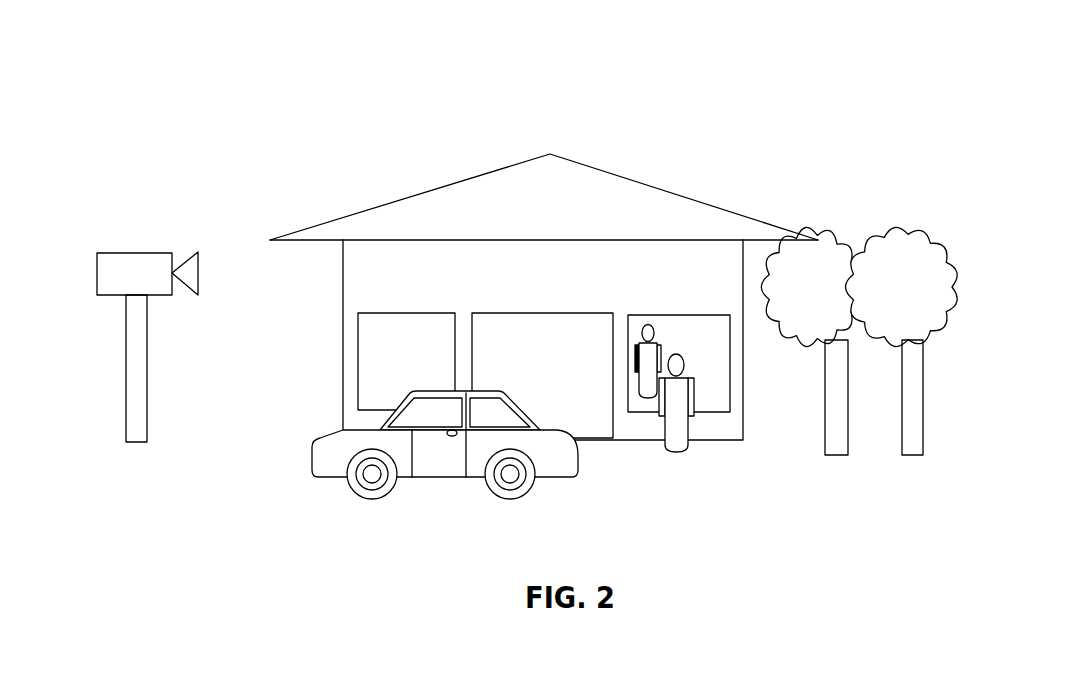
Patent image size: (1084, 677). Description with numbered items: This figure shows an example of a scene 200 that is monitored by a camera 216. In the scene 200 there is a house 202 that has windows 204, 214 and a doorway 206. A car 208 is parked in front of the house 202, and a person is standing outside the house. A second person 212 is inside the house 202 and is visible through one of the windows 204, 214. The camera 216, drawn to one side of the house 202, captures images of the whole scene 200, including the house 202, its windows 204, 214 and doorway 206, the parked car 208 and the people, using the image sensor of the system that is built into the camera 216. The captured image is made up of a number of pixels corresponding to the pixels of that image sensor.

The scene 200 is at (710, 142).
The house 202 is at (713, 272).
The window 204 is at (715, 362).
The doorway 206 is at (553, 338).
The car 208 is at (317, 445).
The second person 212 is at (647, 323).
The window 214 is at (360, 363).
The camera 216 is at (135, 253).